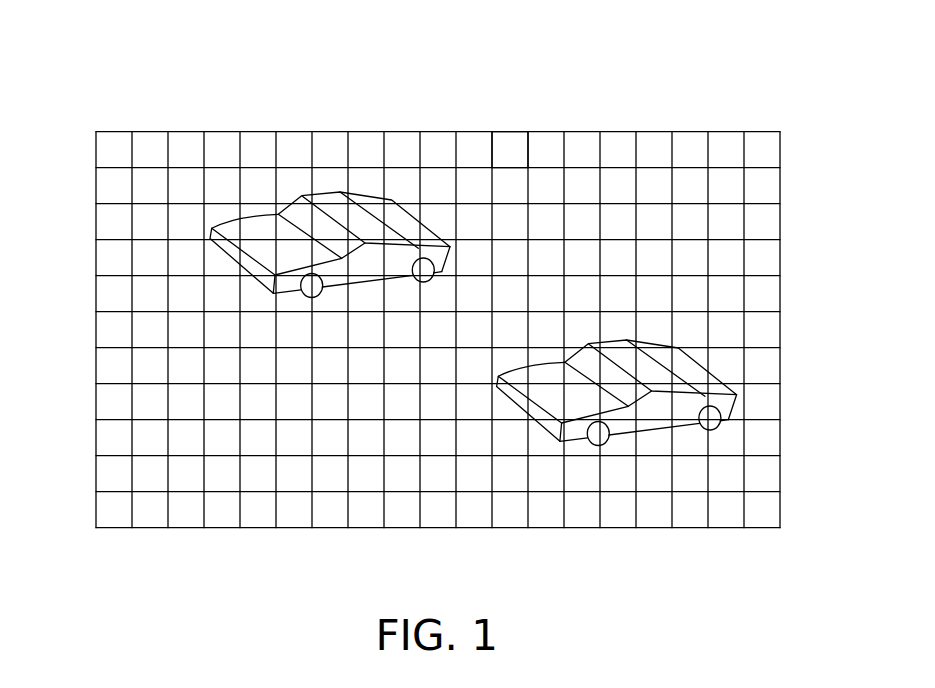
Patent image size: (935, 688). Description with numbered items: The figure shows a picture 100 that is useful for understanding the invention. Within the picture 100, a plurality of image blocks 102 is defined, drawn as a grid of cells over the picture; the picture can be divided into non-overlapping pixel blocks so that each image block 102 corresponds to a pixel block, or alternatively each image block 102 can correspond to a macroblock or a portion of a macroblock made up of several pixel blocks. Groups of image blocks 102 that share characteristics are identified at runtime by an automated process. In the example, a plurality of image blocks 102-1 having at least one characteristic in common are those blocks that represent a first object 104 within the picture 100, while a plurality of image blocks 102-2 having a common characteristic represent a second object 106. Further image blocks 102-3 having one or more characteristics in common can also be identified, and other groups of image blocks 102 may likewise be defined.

The picture 100 is at (87, 36).
The image blocks 102 is at (770, 187).
The plurality of image blocks 102-1 is at (262, 203).
The plurality of image blocks 102-2 is at (728, 363).
The image blocks 102-3 is at (518, 120).
The first object 104 is at (343, 210).
The second object 106 is at (682, 393).